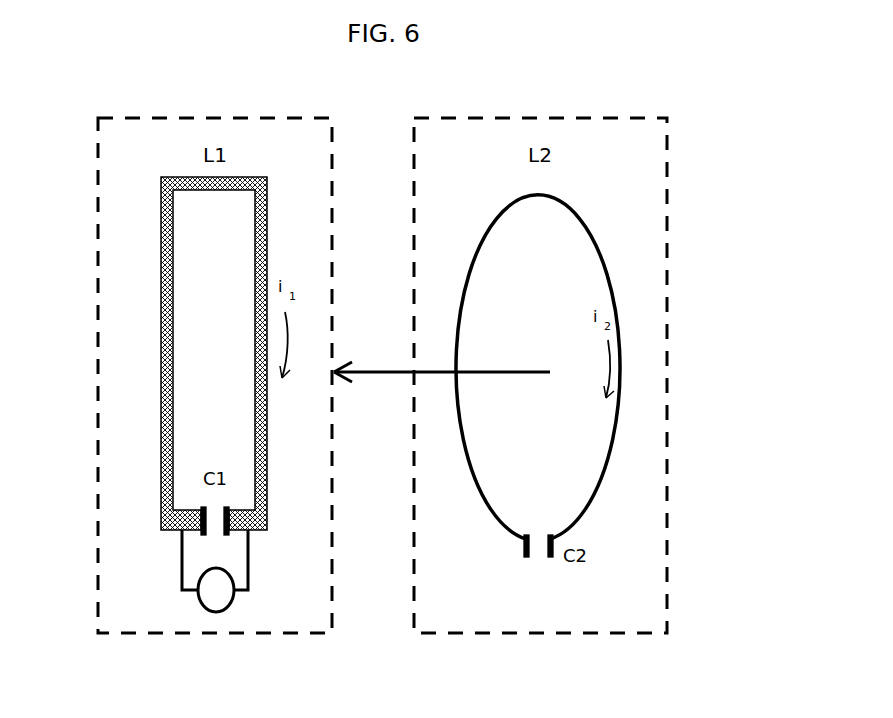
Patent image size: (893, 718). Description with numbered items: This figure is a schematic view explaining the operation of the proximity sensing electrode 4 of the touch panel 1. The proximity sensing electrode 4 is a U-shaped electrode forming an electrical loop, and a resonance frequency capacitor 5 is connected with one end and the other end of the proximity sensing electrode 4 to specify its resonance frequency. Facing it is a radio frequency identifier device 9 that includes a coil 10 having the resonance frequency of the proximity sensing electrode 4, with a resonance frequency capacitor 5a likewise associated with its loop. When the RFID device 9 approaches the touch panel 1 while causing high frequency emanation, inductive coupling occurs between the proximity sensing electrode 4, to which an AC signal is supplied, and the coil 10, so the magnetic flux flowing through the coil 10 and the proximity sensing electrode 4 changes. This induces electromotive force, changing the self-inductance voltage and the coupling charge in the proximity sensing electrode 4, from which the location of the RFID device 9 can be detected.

The touch panel 1 is at (303, 112).
The proximity sensing electrode 4 is at (268, 210).
The resonance frequency capacitor 5 is at (198, 534).
The radio frequency identifier (RFID) device 9 is at (640, 112).
The coil 10 is at (593, 228).
The resonance frequency capacitor 5a is at (524, 548).